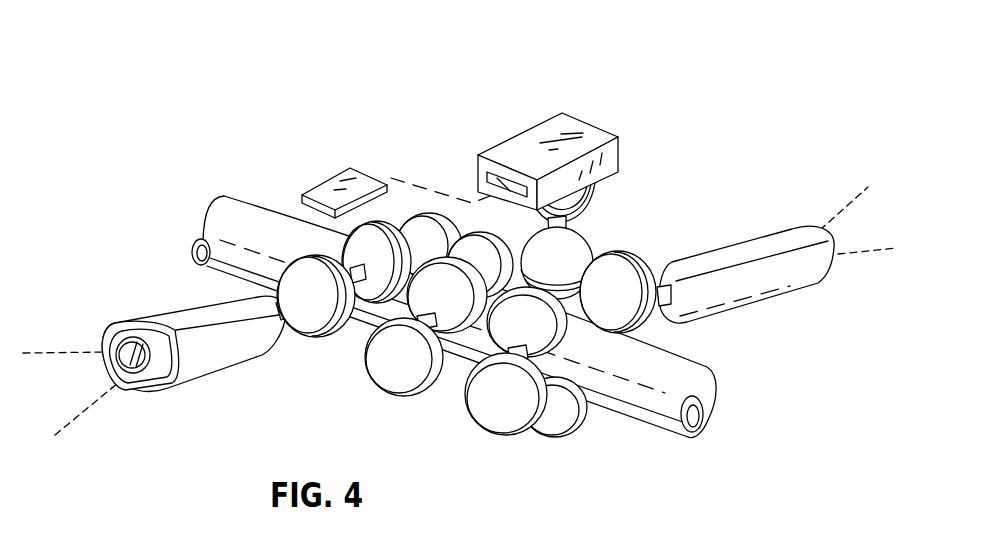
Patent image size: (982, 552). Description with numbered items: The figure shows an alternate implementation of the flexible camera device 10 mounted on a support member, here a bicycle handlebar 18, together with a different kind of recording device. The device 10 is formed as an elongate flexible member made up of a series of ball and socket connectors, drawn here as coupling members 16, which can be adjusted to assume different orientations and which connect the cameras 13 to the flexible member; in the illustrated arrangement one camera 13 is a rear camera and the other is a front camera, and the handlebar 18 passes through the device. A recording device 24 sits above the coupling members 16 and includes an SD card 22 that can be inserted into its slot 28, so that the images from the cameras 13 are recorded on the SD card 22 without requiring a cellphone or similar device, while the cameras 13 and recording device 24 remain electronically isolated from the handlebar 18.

The flexible camera device 10 is at (460, 243).
The camera 13 is at (743, 207).
The coupling member 16 is at (313, 317).
The bicycle handlebar 18 is at (645, 413).
The SD card 22 is at (327, 183).
The recording device 24 is at (523, 125).
The slot 28 is at (507, 188).